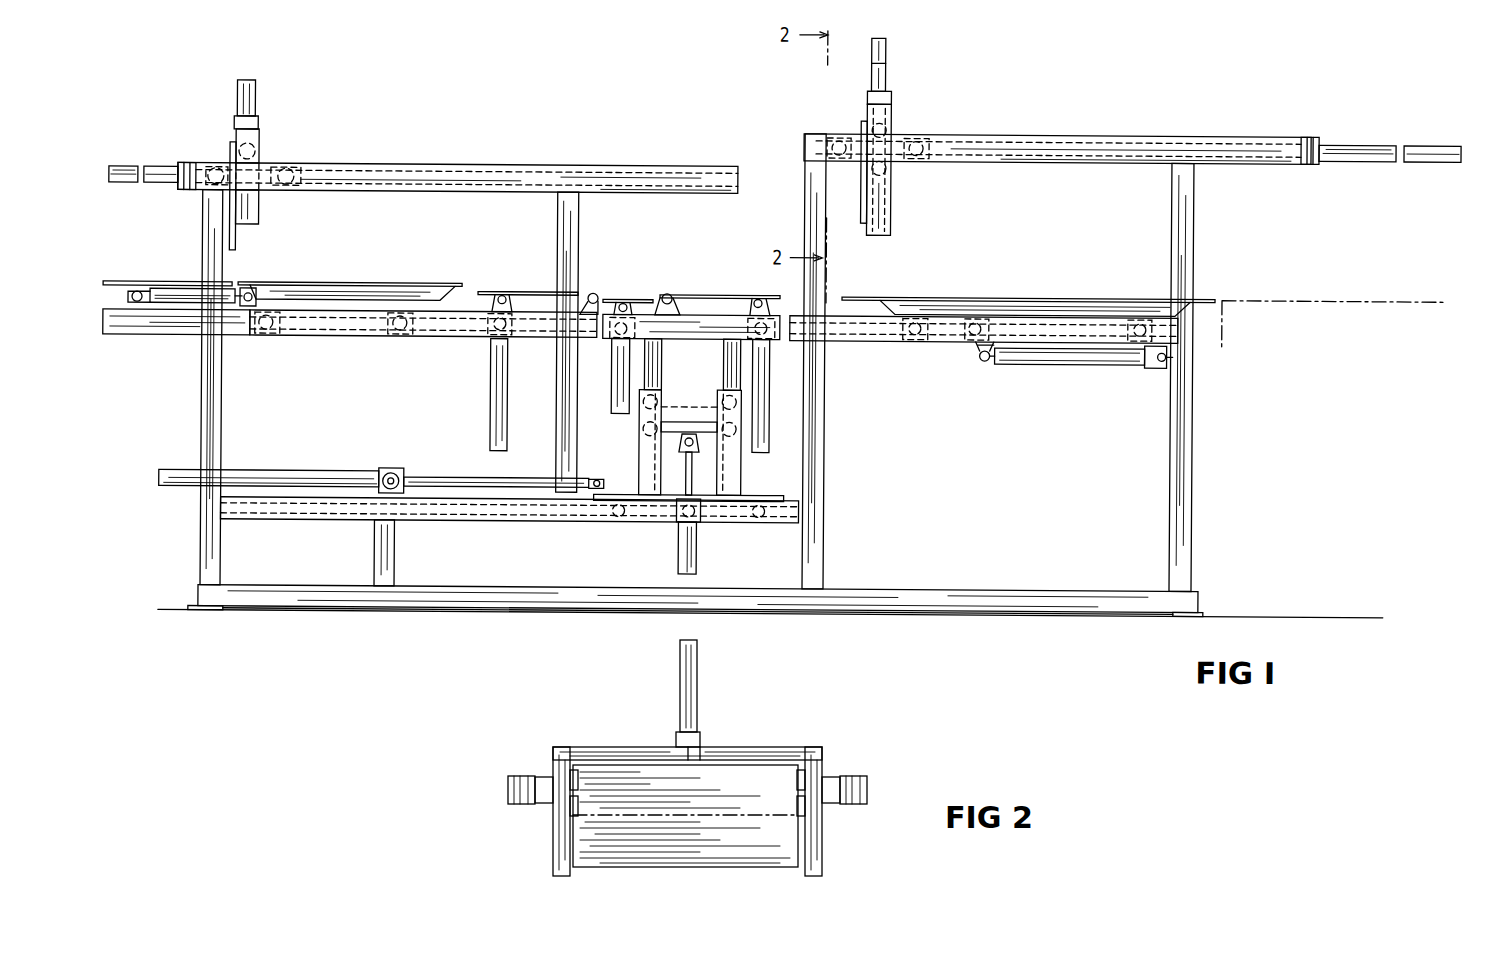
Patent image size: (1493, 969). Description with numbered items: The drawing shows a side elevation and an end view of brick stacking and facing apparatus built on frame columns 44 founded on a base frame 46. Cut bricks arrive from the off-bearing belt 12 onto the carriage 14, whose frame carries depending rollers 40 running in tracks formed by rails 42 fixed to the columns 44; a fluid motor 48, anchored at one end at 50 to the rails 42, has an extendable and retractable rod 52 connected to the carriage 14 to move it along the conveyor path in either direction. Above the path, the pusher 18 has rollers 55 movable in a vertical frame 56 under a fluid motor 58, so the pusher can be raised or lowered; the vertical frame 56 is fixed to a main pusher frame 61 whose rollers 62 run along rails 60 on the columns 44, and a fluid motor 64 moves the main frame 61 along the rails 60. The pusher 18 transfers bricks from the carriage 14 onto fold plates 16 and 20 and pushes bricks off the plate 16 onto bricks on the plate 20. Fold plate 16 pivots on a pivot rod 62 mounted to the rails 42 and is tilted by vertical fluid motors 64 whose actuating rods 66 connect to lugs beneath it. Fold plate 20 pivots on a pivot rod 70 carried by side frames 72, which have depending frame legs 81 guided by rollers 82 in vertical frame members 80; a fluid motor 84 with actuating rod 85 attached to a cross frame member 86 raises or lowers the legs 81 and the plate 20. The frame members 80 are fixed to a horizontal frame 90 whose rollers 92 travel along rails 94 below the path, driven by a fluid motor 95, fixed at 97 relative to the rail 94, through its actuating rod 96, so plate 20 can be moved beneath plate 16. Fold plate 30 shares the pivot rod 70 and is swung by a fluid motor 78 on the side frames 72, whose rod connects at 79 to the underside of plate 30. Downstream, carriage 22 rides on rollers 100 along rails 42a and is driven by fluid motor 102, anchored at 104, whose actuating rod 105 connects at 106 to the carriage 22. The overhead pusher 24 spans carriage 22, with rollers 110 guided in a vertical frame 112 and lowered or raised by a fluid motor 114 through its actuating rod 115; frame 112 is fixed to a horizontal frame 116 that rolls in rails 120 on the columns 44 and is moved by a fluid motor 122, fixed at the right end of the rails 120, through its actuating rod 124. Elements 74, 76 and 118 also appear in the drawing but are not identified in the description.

In FIG. 1, the off-bearing belt 12 is at (132, 283).
In FIG. 1, the carriage 14 is at (334, 283).
In FIG. 1, the fold plate 16 is at (490, 291).
In FIG. 1, the pusher 18 is at (237, 252).
In FIG. 1, the fold plate 20 is at (698, 293).
In FIG. 1, the carriage 22 is at (1022, 294).
In FIG. 1, the overhead pusher 24 is at (860, 190).
In FIG. 2, the overhead pusher 24 is at (697, 867).
In FIG. 1, the fold plate 30 is at (641, 298).
In FIG. 1, the rollers 40 is at (266, 334).
In FIG. 1, the rails 42 is at (358, 336).
In FIG. 1, the rails 42a is at (860, 338).
In FIG. 1, the frame columns 44 is at (222, 422).
In FIG. 1, the base frame 46 is at (278, 607).
In FIG. 1, the fluid motor 48 is at (185, 290).
In FIG. 1, the anchor point 50 is at (138, 336).
In FIG. 1, the rod 52 is at (244, 310).
In FIG. 1, the rollers 55 is at (258, 152).
In FIG. 1, the vertical frame 56 is at (257, 128).
In FIG. 1, the fluid motor 58 is at (254, 100).
In FIG. 1, the rails 60 is at (402, 164).
In FIG. 1, the main pusher frame 61 is at (262, 193).
In FIG. 1, the rollers 62 is at (284, 168).
In FIG. 1, the fluid motor 64 is at (150, 168).
In FIG. 1, the actuating rods 66 is at (512, 294).
In FIG. 1, the pivot rod 70 is at (662, 293).
In FIG. 1, the side frames 72 is at (716, 337).
In FIG. 1, the hanger bar 74 is at (770, 405).
In FIG. 1, the roller bracket 76 is at (770, 300).
In FIG. 1, the fluid motor 78 is at (620, 400).
In FIG. 1, the connection point 79 is at (630, 313).
In FIG. 1, the vertical frame members 80 is at (640, 460).
In FIG. 1, the frame legs 81 is at (724, 374).
In FIG. 1, the rollers 82 is at (689, 413).
In FIG. 1, the fluid motor 84 is at (698, 555).
In FIG. 1, the actuating rod 85 is at (700, 470).
In FIG. 1, the cross frame member 86 is at (680, 444).
In FIG. 1, the horizontal frame 90 is at (772, 493).
In FIG. 1, the rollers 92 is at (760, 520).
In FIG. 1, the rails 94 is at (632, 520).
In FIG. 1, the fluid motor 95 is at (335, 471).
In FIG. 1, the actuating rod 96 is at (466, 477).
In FIG. 1, the fixing point 97 is at (396, 494).
In FIG. 1, the rollers 100 is at (916, 338).
In FIG. 1, the fluid motor 102 is at (1030, 360).
In FIG. 1, the anchor point 104 is at (1170, 348).
In FIG. 1, the actuating rod 105 is at (980, 358).
In FIG. 1, the connection point 106 is at (984, 357).
In FIG. 1, the rollers 110 is at (890, 172).
In FIG. 2, the rollers 110 is at (820, 760).
In FIG. 1, the vertical frame 112 is at (890, 112).
In FIG. 2, the vertical frame 112 is at (822, 862).
In FIG. 1, the fluid motor 114 is at (884, 65).
In FIG. 2, the fluid motor 114 is at (697, 700).
In FIG. 2, the actuating rod 115 is at (700, 747).
In FIG. 1, the horizontal frame 116 is at (902, 133).
In FIG. 2, the horizontal frame 116 is at (864, 800).
In FIG. 1, the bearing bar 118 is at (932, 136).
In FIG. 2, the bearing bar 118 is at (830, 775).
In FIG. 1, the rails 120 is at (1018, 131).
In FIG. 1, the fluid motor 122 is at (1352, 156).
In FIG. 1, the actuating rod 124 is at (1265, 138).